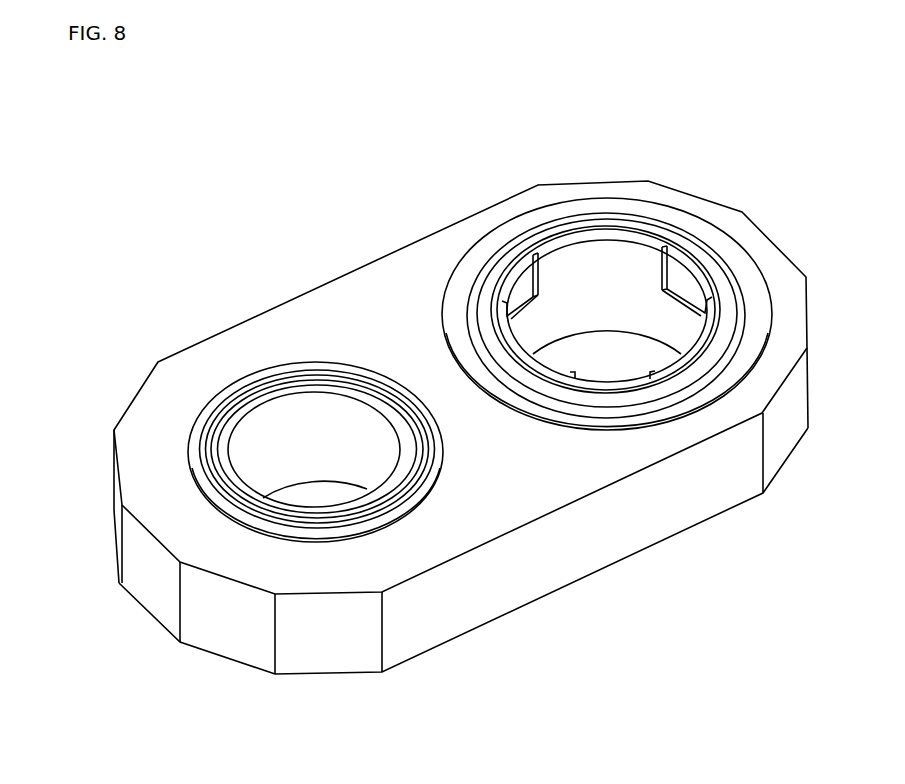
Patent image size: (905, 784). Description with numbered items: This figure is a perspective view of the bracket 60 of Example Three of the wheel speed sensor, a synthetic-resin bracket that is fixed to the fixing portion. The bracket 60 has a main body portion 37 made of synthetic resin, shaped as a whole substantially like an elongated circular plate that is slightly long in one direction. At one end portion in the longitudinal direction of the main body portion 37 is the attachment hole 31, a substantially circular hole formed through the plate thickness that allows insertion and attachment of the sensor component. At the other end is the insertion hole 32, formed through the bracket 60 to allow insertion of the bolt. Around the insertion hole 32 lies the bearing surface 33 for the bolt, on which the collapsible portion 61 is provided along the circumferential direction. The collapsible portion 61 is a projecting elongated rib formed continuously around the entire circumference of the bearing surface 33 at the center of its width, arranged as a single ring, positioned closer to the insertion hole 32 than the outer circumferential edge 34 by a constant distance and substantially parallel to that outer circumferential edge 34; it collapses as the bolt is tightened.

The bracket 60 is at (328, 170).
The attachment hole 31 is at (612, 264).
The insertion hole 32 is at (332, 417).
The bearing surface 33 is at (208, 410).
The outer circumferential edge 34 is at (270, 531).
The main body portion 37 is at (400, 260).
The collapsible portion 61 is at (250, 390).